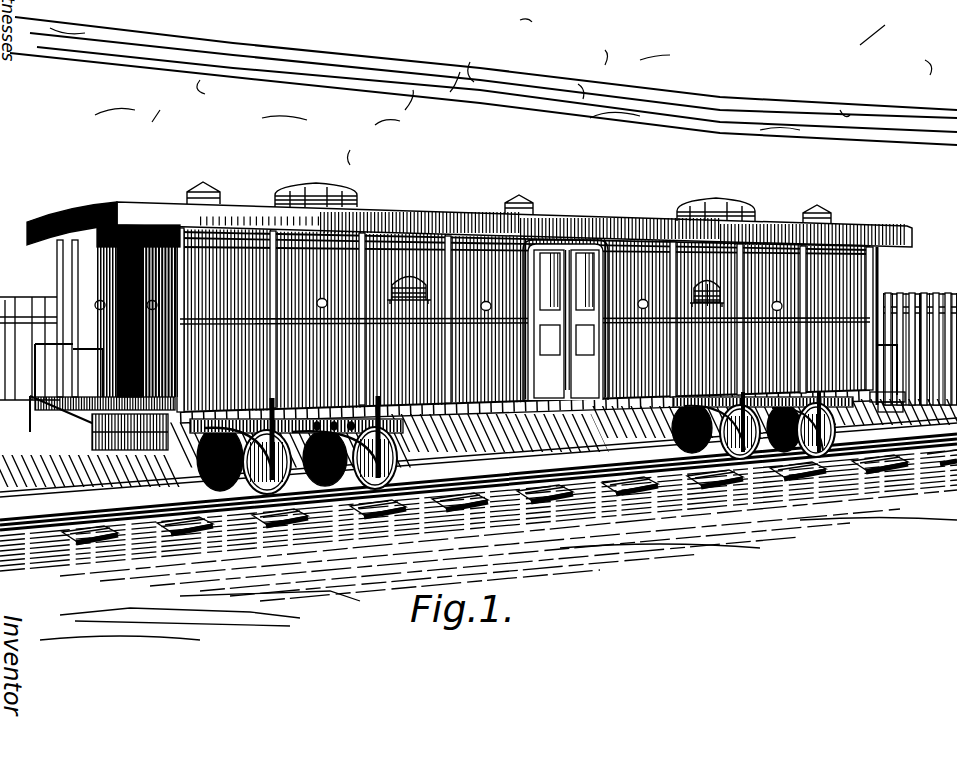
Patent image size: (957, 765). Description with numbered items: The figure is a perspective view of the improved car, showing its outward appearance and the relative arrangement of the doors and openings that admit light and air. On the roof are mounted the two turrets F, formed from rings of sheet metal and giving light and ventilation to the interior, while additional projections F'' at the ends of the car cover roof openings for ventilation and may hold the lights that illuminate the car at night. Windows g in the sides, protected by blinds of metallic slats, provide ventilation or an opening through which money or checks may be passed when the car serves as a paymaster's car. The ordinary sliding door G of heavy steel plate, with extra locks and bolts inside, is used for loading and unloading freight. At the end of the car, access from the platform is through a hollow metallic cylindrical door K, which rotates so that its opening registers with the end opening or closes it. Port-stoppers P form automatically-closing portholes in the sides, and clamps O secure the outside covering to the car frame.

The turret F is at (515, 189).
The projection F'' is at (511, 191).
The cylindrical door K is at (122, 277).
The port-stopper P is at (643, 300).
The clamp O is at (676, 353).
The sliding door G is at (565, 320).
The window g is at (721, 275).
The knob e is at (438, 305).